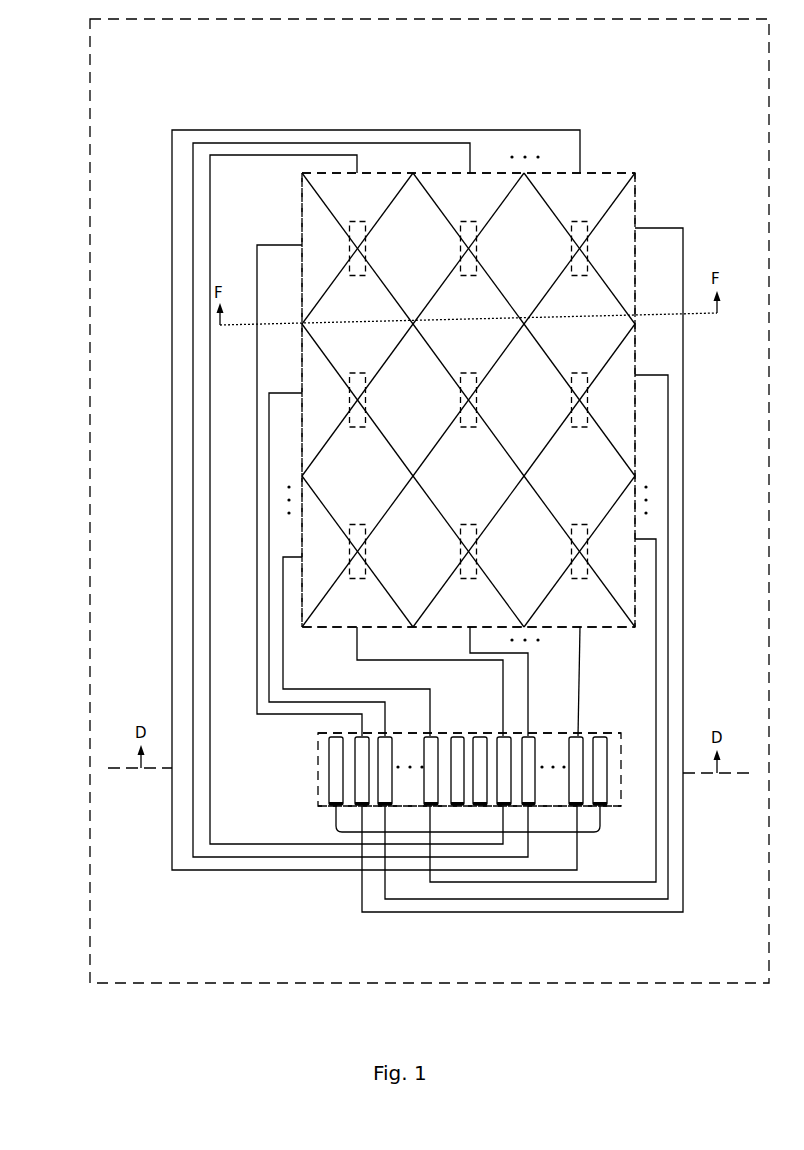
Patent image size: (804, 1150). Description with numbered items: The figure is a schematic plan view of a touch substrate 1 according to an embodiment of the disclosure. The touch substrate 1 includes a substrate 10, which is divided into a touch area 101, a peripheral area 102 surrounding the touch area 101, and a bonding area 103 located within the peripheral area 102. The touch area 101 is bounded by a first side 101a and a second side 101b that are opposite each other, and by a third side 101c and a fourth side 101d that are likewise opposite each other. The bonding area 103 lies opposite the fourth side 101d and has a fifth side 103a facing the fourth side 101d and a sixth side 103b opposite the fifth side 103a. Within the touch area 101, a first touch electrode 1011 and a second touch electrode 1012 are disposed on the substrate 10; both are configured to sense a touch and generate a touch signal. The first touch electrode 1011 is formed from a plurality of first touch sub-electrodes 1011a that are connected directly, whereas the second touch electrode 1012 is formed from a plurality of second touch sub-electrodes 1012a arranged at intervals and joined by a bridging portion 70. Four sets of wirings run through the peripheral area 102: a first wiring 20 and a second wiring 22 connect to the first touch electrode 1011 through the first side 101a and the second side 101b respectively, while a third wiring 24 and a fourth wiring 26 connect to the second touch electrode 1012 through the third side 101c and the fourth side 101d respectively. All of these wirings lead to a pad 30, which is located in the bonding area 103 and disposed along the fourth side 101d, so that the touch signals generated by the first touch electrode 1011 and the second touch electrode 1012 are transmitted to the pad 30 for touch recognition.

The touch substrate 1 is at (68, 48).
The substrate 10 is at (79, 175).
The touch area 101 is at (647, 183).
The first touch electrode 1011 is at (291, 215).
The first touch sub-electrode 1011a is at (394, 234).
The second touch electrode 1012 is at (608, 180).
The second touch sub-electrode 1012a is at (336, 340).
The first side 101a is at (300, 379).
The second side 101b is at (681, 367).
The third side 101c is at (439, 173).
The fourth side 101d is at (446, 660).
The peripheral area 102 is at (745, 529).
The bonding area 103 is at (433, 772).
The fifth side 103a is at (497, 728).
The sixth side 103b is at (488, 832).
The first wiring 20 is at (295, 713).
The second wiring 22 is at (600, 883).
The third wiring 24 is at (318, 846).
The fourth wiring 26 is at (505, 708).
The pad 30 is at (548, 832).
The bridging portion 70 is at (375, 248).